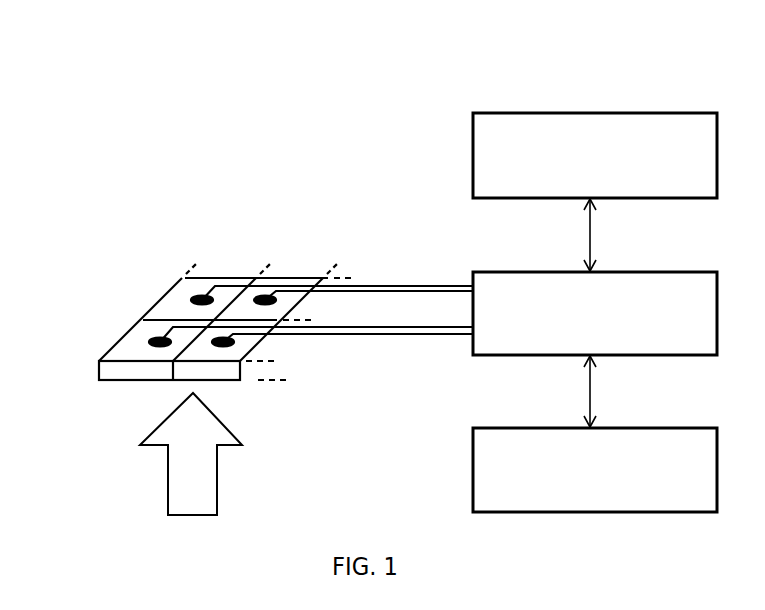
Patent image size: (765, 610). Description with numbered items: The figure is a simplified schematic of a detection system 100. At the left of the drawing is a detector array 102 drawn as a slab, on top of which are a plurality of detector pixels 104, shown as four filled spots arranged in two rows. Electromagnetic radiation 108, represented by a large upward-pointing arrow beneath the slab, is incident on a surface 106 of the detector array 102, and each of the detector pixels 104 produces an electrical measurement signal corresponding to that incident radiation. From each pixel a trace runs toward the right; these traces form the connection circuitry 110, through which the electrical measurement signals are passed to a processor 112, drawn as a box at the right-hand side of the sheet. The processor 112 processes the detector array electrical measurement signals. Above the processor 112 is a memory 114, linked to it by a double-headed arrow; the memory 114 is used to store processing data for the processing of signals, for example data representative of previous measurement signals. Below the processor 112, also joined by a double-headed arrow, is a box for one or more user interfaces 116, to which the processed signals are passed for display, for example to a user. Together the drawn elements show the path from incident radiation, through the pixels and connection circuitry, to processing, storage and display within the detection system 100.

The detection system 100 is at (152, 75).
The detector array 102 is at (213, 245).
The detector pixels 104 is at (146, 337).
The surface 106 is at (132, 381).
The electromagnetic radiation 108 is at (191, 454).
The connection circuitry 110 is at (400, 350).
The processor 112 is at (595, 313).
The memory 114 is at (595, 155).
The user interfaces 116 is at (595, 470).